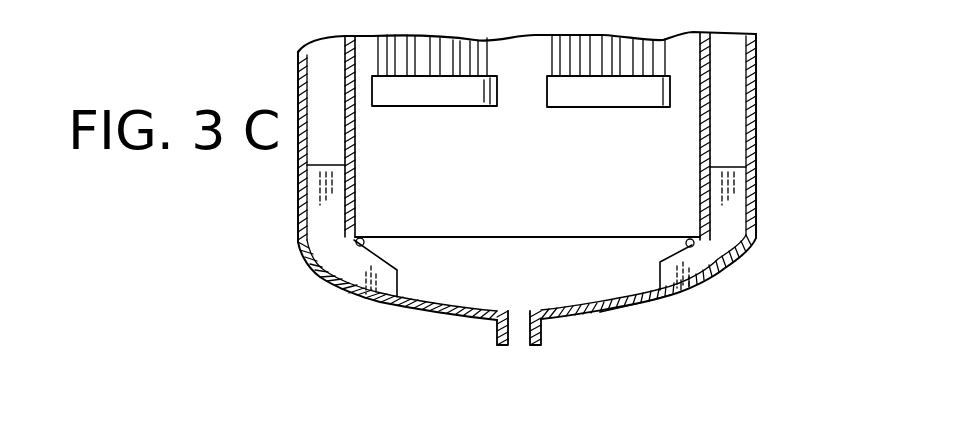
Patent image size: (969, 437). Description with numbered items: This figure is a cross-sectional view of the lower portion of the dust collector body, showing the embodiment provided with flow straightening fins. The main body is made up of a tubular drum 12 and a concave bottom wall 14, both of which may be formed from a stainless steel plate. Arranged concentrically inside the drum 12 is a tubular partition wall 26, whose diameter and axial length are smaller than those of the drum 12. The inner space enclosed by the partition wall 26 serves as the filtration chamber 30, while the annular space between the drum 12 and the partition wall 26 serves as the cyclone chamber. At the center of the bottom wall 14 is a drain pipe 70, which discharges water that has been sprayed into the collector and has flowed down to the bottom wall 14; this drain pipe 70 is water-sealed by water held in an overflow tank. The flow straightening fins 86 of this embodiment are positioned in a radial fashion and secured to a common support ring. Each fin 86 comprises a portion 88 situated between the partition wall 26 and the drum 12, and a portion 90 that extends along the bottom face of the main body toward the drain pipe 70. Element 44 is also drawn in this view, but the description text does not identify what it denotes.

The drum 12 is at (756, 108).
The bottom wall 14 is at (657, 299).
The tubular partition wall 26 is at (700, 132).
The filtration chamber 30 is at (547, 213).
The heat sink fins 44 is at (575, 91).
The drain pipe 70 is at (541, 333).
The flow straightening fin 86 is at (320, 237).
The portion situated between the partition wall and the drum 88 is at (733, 198).
The portion extending along the bottom face 90 is at (693, 283).